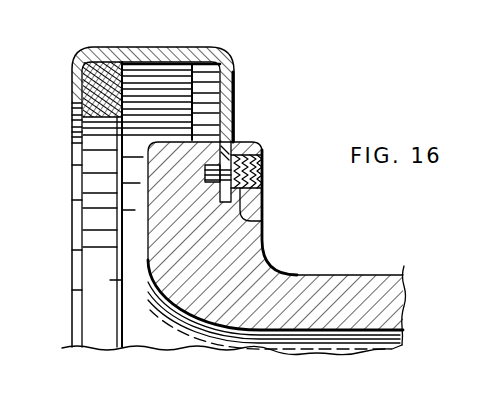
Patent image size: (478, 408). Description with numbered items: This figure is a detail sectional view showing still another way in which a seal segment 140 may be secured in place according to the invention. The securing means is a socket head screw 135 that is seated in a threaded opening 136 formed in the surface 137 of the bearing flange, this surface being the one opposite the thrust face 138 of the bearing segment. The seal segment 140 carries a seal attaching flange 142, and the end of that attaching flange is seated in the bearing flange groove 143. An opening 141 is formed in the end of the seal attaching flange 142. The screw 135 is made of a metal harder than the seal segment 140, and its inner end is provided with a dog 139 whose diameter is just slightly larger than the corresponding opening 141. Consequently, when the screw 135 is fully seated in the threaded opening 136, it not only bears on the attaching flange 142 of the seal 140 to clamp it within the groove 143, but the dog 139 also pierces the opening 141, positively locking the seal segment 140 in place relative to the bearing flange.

The seal segment 140 is at (176, 47).
The opening 141 is at (234, 132).
The bearing flange groove 143 is at (224, 146).
The socket head screw 135 is at (266, 166).
The surface 137 is at (266, 198).
The threaded opening 136 is at (251, 221).
The seal attaching flange 142 is at (217, 198).
The thrust face 138 is at (147, 188).
The dog 139 is at (206, 176).